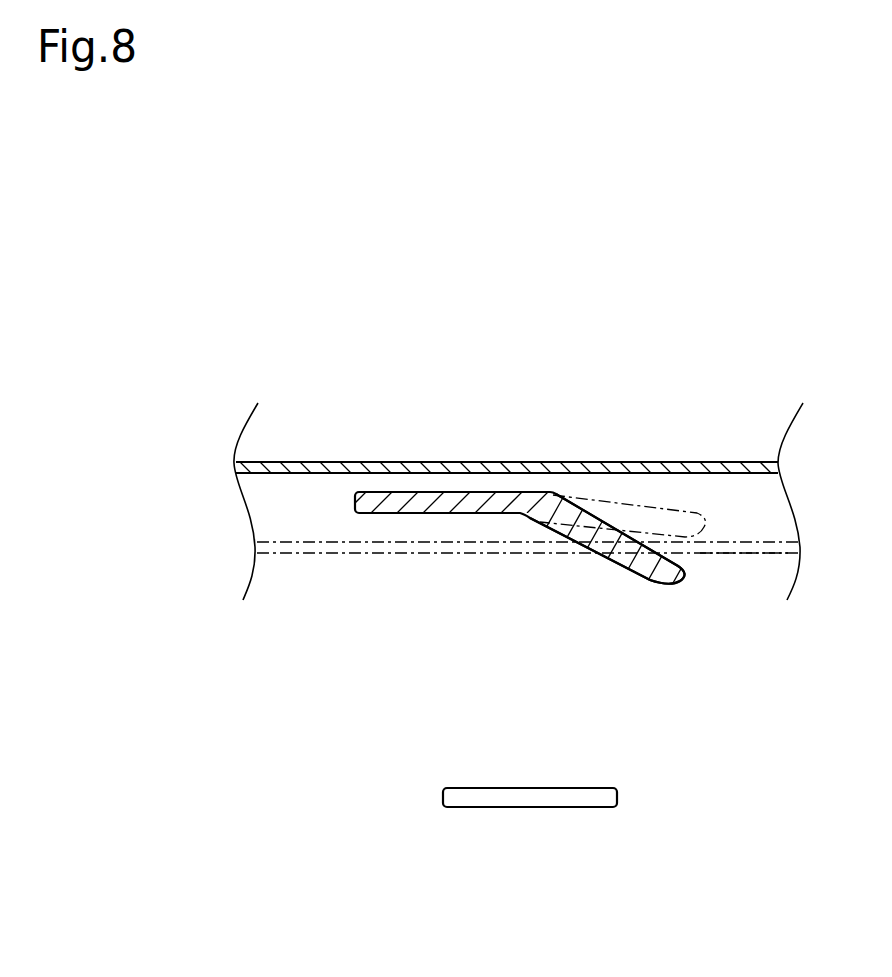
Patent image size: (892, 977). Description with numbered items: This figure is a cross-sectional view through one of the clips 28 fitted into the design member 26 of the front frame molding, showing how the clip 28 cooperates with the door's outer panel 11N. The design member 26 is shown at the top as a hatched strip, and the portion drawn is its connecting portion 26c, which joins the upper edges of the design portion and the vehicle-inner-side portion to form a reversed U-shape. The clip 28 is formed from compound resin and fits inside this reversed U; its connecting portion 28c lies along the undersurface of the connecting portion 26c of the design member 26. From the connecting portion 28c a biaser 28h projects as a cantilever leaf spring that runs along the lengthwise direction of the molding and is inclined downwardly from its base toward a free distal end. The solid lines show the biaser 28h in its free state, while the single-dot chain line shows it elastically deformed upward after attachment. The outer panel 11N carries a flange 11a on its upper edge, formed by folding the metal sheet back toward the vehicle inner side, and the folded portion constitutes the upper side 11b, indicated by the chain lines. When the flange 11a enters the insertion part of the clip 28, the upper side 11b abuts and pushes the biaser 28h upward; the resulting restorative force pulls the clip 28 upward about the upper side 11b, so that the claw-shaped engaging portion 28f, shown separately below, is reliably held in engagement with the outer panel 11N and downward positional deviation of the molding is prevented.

The design member 26 is at (354, 458).
The connecting portion 26c is at (515, 460).
The clip 28 is at (407, 484).
The connecting portion 28c is at (455, 508).
The biaser 28h is at (653, 523).
The engaging portion 28f is at (603, 797).
The upper side 11b is at (528, 606).
The flange 11a is at (313, 548).
The outer panel 11N is at (746, 562).